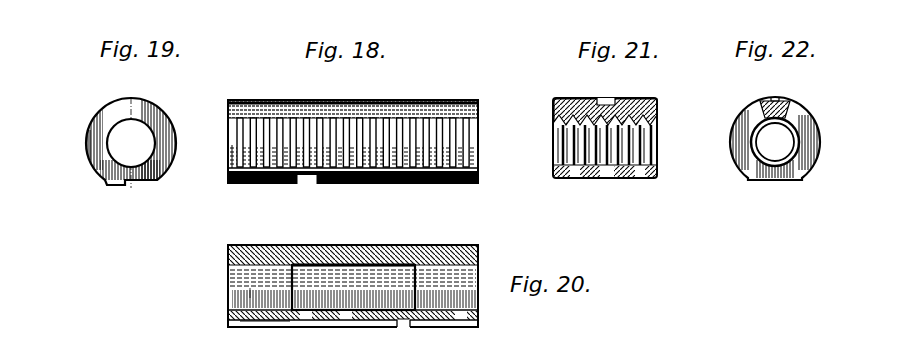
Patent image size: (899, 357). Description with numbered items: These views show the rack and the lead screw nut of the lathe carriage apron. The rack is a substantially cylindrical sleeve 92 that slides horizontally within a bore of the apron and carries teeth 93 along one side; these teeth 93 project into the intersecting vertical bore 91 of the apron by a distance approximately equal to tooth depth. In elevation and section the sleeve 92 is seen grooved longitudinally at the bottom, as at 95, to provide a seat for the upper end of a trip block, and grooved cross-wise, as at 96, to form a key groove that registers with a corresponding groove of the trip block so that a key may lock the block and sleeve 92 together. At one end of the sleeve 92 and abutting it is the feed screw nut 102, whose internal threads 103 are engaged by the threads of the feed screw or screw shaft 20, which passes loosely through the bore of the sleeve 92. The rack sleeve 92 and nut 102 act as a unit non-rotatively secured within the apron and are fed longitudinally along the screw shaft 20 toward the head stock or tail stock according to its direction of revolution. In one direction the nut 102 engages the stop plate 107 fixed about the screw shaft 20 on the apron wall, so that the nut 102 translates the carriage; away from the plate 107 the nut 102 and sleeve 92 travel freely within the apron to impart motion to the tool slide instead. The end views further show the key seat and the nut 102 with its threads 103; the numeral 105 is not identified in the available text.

In FIG. 19, the screw shaft 20 is at (131, 220).
In FIG. 19, the vertical bore 91 is at (155, 120).
In FIG. 18, the sleeve 92 is at (393, 100).
In FIG. 20, the sleeve 92 is at (308, 247).
In FIG. 19, the teeth 93 is at (90, 147).
In FIG. 18, the teeth 93 is at (232, 165).
In FIG. 20, the teeth 93 is at (250, 296).
In FIG. 19, the longitudinal groove 95 is at (120, 183).
In FIG. 20, the longitudinal groove 95 is at (262, 322).
In FIG. 18, the cross-wise groove 96 is at (308, 179).
In FIG. 20, the cross-wise groove 96 is at (408, 323).
In FIG. 21, the feed screw nut 102 is at (633, 99).
In FIG. 21, the internal threads 103 is at (656, 135).
In FIG. 22, the stop plate 107 is at (796, 109).
In FIG. 22, the inner ring 105 is at (798, 128).